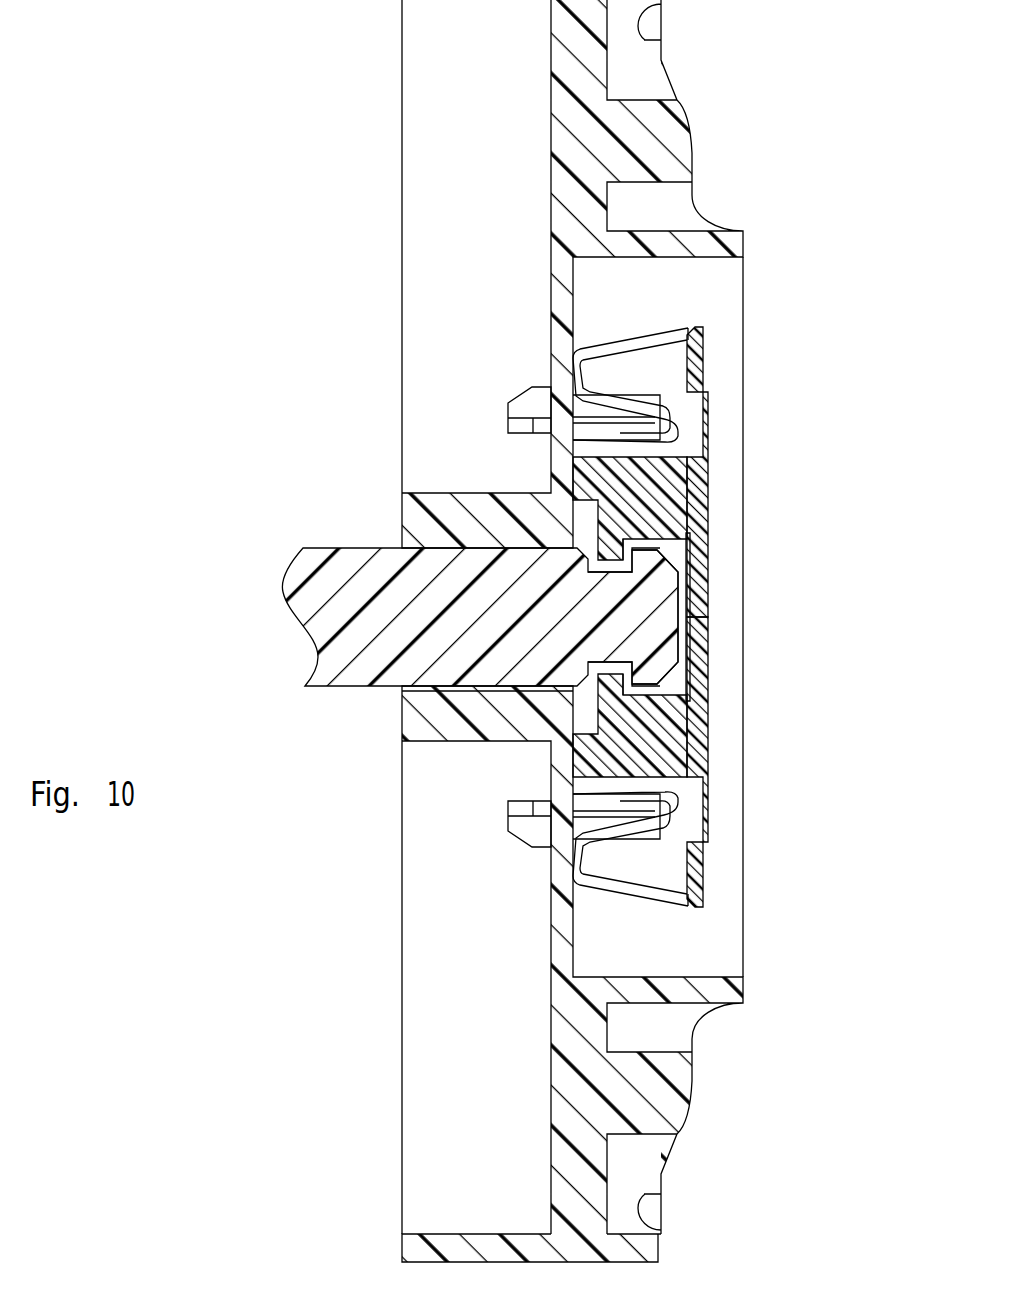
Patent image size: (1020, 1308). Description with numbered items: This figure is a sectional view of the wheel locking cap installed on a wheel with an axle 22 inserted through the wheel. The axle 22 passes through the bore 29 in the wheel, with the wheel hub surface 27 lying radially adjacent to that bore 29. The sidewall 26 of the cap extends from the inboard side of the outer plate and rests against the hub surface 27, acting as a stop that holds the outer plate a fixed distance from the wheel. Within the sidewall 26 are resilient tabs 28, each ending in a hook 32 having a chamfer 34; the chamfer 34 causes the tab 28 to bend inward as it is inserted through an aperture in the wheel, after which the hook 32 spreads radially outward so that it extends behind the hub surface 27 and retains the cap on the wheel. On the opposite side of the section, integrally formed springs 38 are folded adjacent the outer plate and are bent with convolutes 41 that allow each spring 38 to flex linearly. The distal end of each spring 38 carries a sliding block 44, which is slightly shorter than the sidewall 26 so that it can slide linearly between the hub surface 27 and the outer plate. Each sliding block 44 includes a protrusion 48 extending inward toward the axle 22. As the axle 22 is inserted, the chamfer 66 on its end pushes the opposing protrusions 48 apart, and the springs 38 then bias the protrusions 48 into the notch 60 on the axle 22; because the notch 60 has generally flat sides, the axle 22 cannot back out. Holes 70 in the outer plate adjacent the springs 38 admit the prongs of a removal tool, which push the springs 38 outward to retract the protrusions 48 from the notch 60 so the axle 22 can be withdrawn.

The axle 22 is at (290, 578).
The sidewall 26 is at (575, 905).
The wheel hub surface 27 is at (577, 935).
The tab 28 is at (535, 430).
The bore 29 is at (435, 695).
The hook 32 is at (547, 383).
The chamfer 34 is at (528, 392).
The spring 38 is at (650, 330).
The convolutes 41 is at (568, 360).
The sliding block 44 is at (590, 478).
The protrusion 48 is at (650, 546).
The notch 60 is at (640, 595).
The chamfer 66 is at (690, 698).
The hole 70 is at (700, 433).